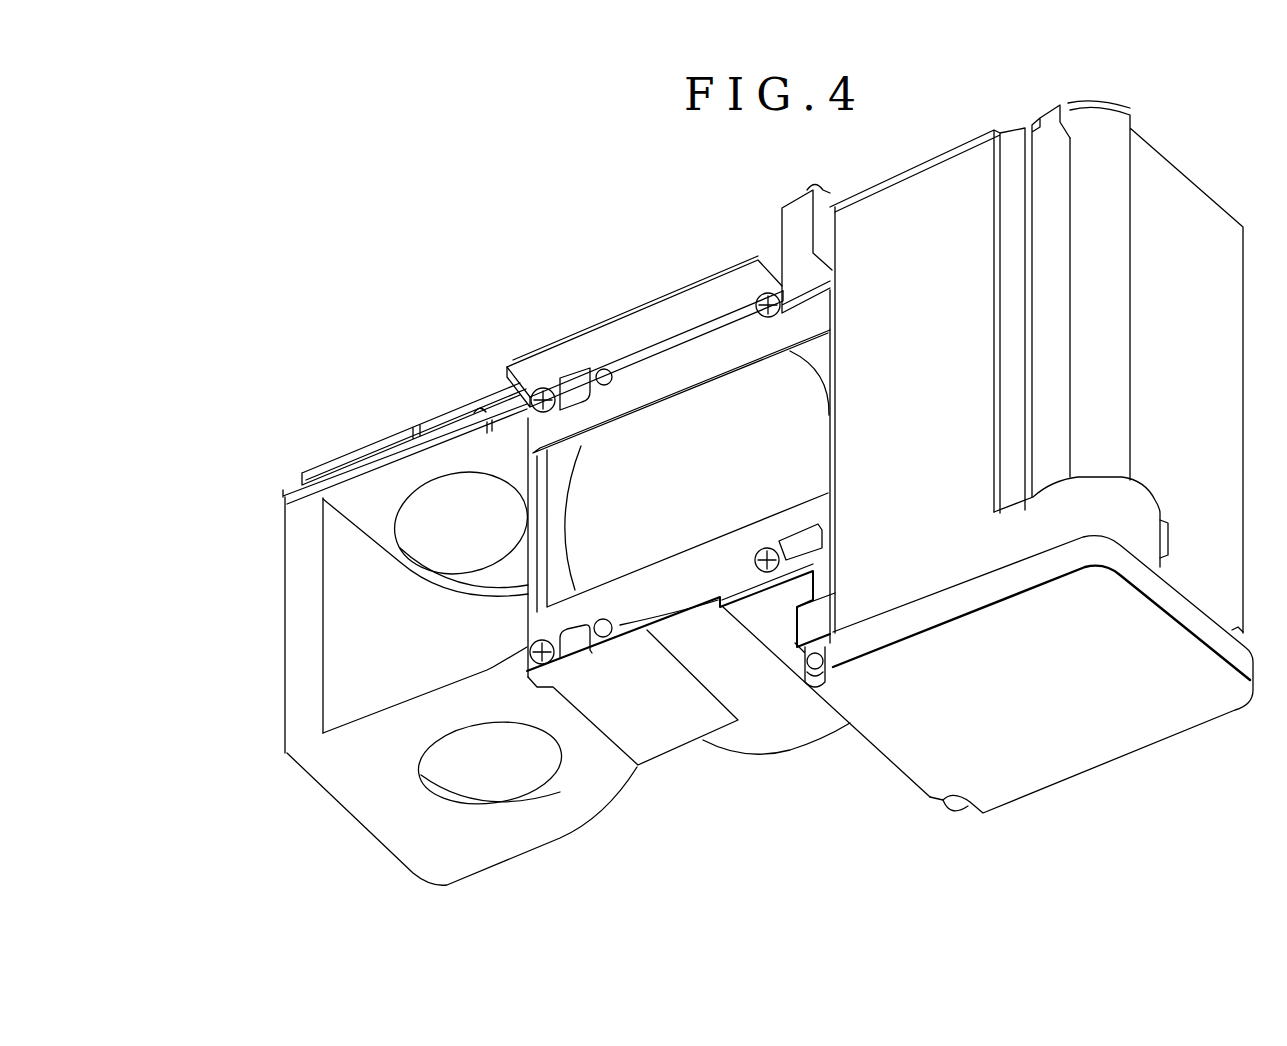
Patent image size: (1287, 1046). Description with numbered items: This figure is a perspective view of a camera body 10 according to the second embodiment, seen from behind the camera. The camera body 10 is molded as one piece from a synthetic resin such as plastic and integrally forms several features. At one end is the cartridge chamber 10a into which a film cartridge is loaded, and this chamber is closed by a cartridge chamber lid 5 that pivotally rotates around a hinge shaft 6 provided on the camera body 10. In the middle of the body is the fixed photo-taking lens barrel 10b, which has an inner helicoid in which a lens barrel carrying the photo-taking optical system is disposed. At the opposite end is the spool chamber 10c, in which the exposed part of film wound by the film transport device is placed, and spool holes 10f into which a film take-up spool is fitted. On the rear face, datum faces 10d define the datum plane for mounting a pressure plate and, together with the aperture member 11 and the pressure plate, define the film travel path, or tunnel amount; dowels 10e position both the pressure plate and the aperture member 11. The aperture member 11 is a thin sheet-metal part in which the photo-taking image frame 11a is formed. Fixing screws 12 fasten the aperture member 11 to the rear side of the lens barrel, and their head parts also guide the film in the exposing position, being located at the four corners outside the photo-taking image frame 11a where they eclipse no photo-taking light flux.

The cartridge chamber lid 5 is at (1117, 748).
The hinge shaft 6 is at (814, 690).
The camera body 10 is at (690, 288).
The cartridge chamber 10a is at (1213, 195).
The fixed photo-taking lens barrel 10b is at (758, 735).
The spool chamber 10c is at (345, 618).
The datum faces 10d is at (800, 290).
The dowels 10e is at (600, 370).
The spool holes 10f is at (467, 485).
The aperture member 11 is at (667, 600).
The photo-taking image frame 11a is at (762, 360).
The fixing screws 12 is at (535, 395).